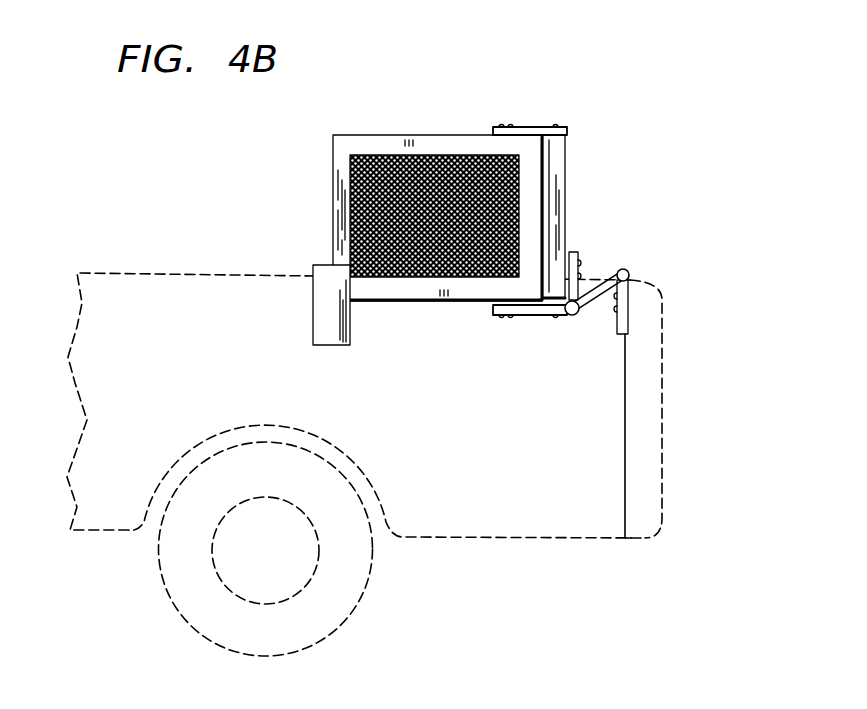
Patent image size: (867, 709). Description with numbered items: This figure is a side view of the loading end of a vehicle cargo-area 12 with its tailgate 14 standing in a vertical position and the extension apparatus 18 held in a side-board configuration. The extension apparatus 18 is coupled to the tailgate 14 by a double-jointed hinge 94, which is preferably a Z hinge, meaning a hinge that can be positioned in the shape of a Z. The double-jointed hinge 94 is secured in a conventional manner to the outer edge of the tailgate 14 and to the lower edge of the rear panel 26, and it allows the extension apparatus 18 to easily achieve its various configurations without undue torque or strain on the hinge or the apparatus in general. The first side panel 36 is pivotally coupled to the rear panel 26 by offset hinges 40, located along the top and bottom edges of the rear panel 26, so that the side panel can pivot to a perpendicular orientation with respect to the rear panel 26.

The cargo-area 12 is at (147, 250).
The tailgate 14 is at (650, 377).
The extension apparatus 18 is at (517, 221).
The rear panel 26 is at (566, 190).
The first side panel 36 is at (387, 135).
The offset hinge 40 is at (535, 127).
The double-jointed hinge 94 is at (611, 277).